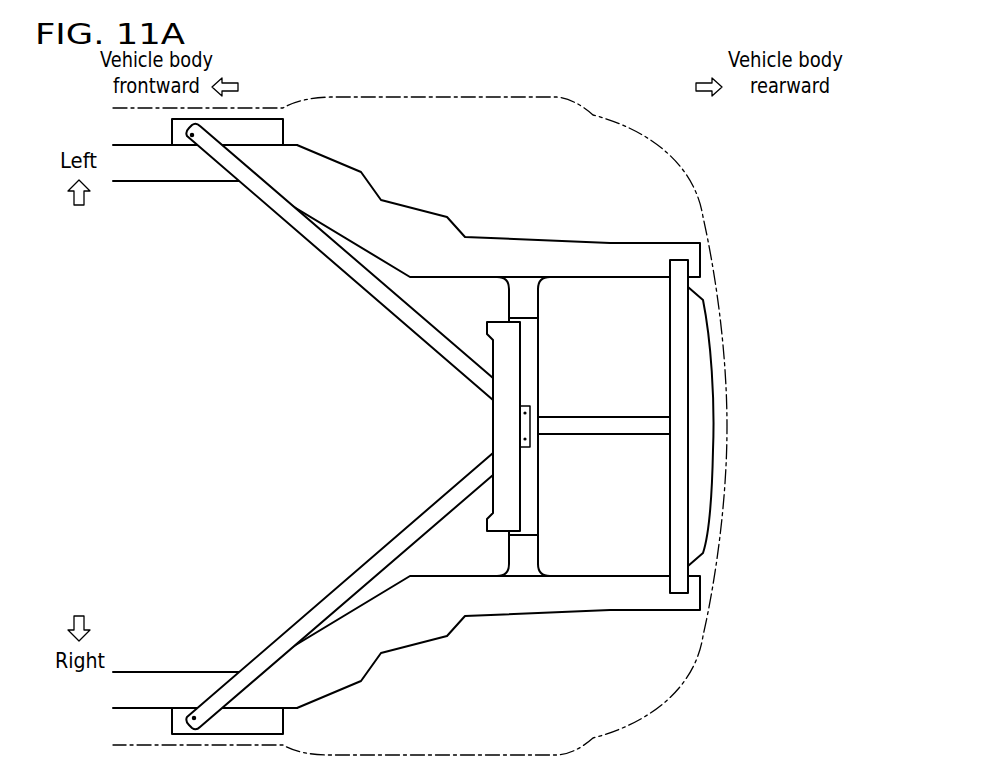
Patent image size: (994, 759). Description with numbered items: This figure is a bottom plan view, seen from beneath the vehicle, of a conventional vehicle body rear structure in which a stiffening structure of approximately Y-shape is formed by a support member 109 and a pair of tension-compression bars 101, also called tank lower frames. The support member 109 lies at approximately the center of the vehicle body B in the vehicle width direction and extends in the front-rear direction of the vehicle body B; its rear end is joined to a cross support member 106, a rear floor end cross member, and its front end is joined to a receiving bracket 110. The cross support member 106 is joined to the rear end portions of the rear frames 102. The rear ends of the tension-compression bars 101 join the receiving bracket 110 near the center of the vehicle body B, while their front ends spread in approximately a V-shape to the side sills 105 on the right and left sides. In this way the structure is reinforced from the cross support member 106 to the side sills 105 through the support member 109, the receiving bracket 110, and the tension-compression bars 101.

The tension-compression bars 101 is at (367, 280).
The rear frames 102 is at (588, 253).
The side sills 105 is at (153, 167).
The cross support member 106 is at (695, 378).
The support member 109 is at (602, 425).
The receiving bracket 110 is at (556, 352).
The vehicle body B is at (697, 187).